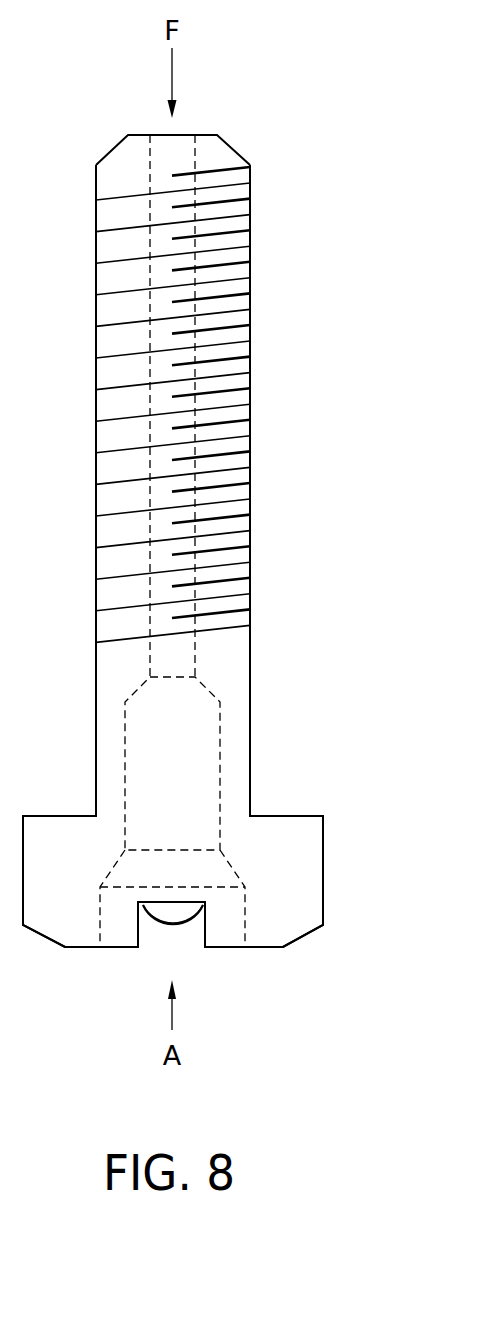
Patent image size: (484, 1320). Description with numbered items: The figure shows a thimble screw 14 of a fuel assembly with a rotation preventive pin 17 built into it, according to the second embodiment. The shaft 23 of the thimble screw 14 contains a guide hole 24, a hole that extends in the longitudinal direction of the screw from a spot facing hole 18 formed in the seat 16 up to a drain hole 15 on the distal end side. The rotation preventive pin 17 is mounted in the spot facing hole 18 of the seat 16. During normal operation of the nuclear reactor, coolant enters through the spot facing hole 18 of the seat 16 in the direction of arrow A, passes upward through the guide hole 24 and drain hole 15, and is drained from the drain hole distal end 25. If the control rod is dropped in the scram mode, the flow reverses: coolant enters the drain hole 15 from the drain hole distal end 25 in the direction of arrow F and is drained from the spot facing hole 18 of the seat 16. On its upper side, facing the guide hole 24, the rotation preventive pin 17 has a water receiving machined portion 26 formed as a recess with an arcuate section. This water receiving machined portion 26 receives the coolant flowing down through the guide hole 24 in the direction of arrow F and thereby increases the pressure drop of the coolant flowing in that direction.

The thimble screw 14 is at (273, 270).
The drain hole 15 is at (188, 337).
The seat 16 is at (325, 855).
The rotation preventive pin 17 is at (190, 932).
The spot facing hole 18 is at (115, 935).
The shaft 23 is at (247, 470).
The guide hole 24 is at (206, 726).
The drain hole distal end 25 is at (178, 134).
The water receiving machined portion 26 is at (178, 912).